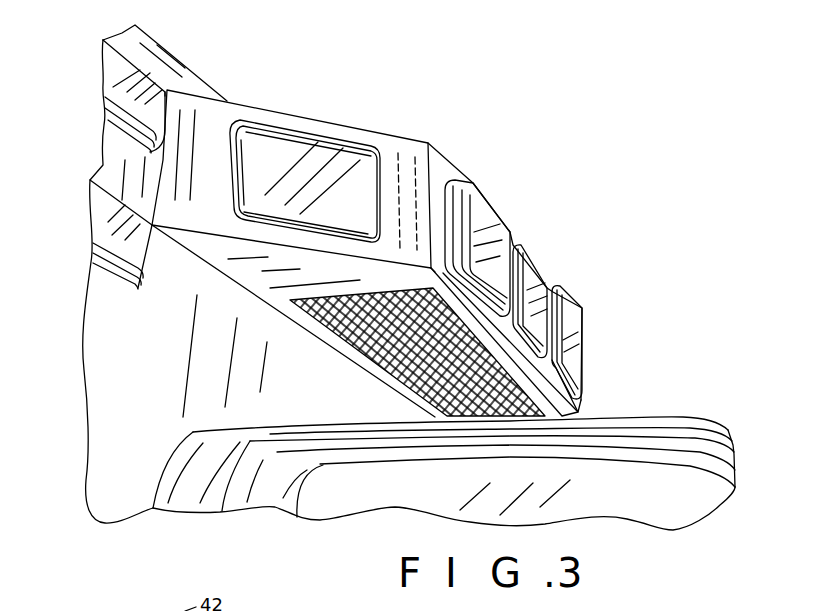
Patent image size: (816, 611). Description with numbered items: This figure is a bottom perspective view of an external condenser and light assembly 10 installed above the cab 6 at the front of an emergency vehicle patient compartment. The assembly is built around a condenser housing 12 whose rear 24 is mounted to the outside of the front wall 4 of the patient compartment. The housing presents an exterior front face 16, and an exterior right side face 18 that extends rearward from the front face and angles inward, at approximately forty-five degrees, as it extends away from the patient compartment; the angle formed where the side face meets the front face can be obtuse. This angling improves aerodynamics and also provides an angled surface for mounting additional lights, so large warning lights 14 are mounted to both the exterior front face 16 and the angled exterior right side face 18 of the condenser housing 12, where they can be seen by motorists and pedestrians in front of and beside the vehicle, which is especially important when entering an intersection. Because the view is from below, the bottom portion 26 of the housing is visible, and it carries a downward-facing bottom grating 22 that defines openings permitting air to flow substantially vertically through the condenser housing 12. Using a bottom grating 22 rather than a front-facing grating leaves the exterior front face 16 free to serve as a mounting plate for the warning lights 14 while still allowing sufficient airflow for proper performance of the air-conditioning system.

The front wall 4 is at (135, 433).
The cab 6 is at (688, 410).
The external condenser and light assembly 10 is at (398, 130).
The condenser housing 12 is at (447, 160).
The warning lights 14 is at (307, 160).
The exterior front face 16 is at (450, 160).
The exterior right side face 18 is at (198, 125).
The bottom grating 22 is at (545, 360).
The rear 24 is at (195, 262).
The bottom portion 26 is at (258, 268).